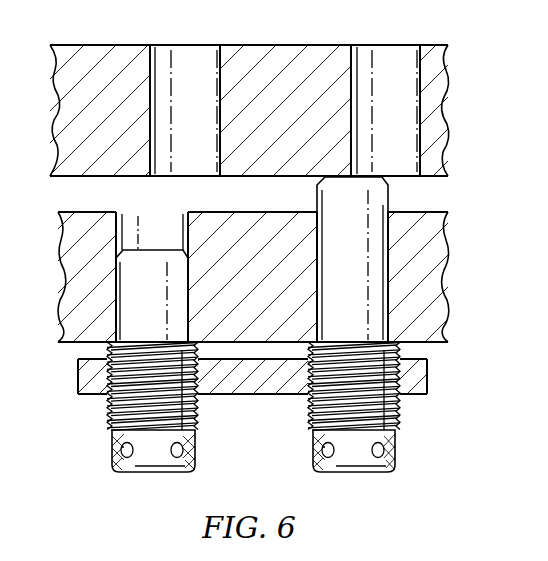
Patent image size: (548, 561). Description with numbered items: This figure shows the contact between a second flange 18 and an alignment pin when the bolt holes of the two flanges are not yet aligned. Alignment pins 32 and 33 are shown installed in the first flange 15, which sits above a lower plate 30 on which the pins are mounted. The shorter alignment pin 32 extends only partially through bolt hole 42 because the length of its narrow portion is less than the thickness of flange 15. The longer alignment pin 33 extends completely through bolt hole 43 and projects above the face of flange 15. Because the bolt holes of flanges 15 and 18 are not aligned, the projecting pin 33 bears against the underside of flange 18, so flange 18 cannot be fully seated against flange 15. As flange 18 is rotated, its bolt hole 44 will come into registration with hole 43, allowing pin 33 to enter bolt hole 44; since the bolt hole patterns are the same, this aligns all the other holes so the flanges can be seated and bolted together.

The flange 15 is at (437, 268).
The flange 18 is at (437, 88).
The lower plate / backing plate 30 is at (427, 378).
The alignment pin 32 is at (145, 481).
The alignment pin 33 is at (363, 481).
The bolt hole 42 is at (185, 212).
The bolt hole 43 is at (388, 208).
The bolt hole 44 is at (418, 64).